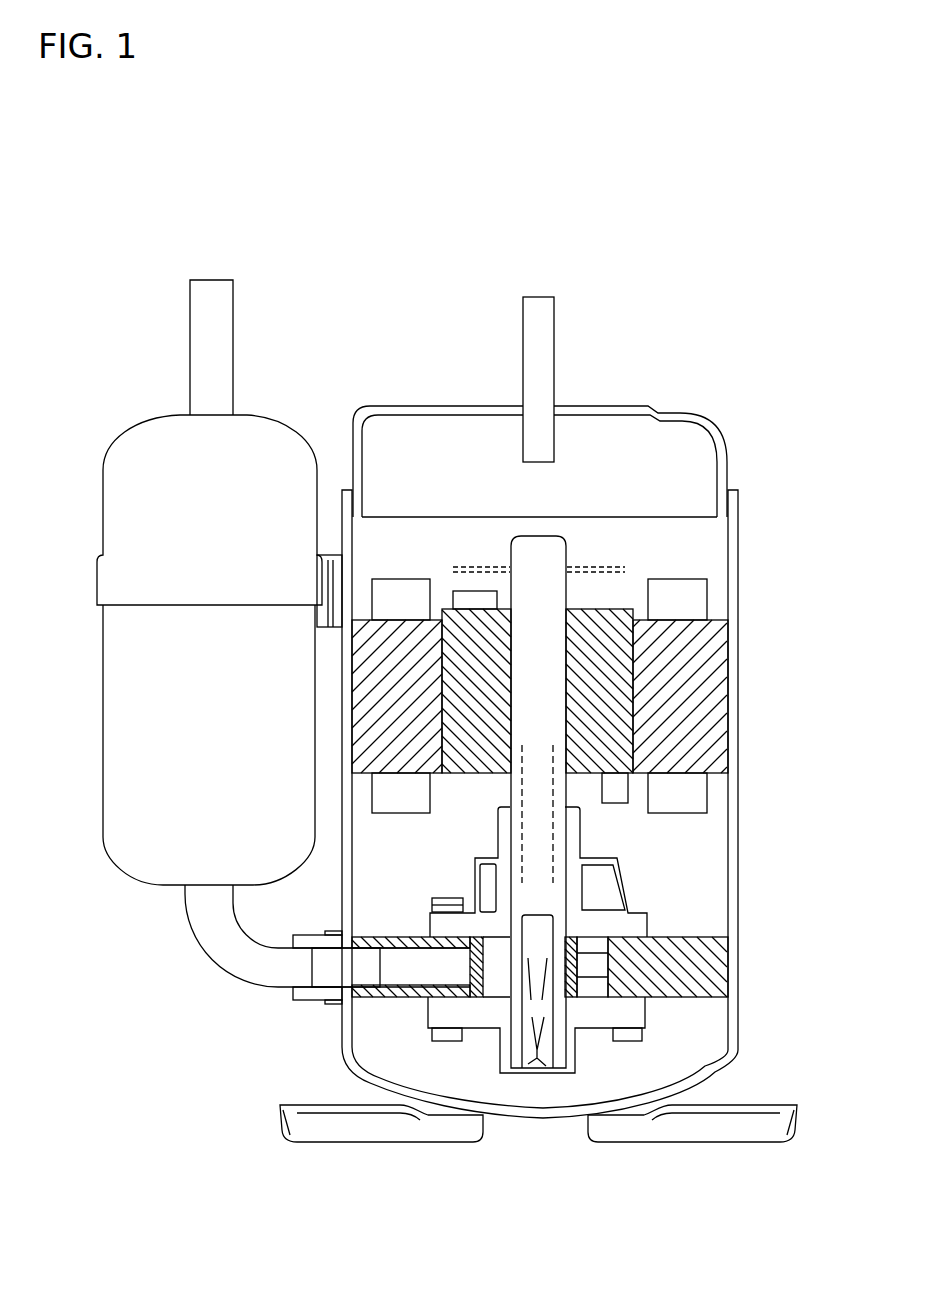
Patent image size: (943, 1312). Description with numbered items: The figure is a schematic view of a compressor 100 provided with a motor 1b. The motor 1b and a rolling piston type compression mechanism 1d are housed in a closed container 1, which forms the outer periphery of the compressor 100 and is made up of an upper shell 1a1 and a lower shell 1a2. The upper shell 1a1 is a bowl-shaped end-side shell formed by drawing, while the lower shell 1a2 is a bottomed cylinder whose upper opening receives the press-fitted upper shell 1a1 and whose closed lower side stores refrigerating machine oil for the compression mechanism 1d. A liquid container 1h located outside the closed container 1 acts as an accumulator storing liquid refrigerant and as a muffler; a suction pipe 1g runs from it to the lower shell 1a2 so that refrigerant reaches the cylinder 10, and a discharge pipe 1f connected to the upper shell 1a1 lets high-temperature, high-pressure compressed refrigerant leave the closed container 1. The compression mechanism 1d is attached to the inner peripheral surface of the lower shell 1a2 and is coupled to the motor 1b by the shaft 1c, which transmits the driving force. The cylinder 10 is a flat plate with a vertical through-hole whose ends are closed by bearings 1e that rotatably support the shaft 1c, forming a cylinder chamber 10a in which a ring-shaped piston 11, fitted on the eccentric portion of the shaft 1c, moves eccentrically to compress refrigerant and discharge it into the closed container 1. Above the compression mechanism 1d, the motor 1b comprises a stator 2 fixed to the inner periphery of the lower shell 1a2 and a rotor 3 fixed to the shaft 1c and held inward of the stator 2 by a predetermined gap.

The compressor 100 is at (134, 228).
The closed container 1 is at (701, 430).
The upper shell 1a1 is at (718, 452).
The lower shell 1a2 is at (737, 843).
The motor 1b is at (785, 625).
The shaft 1c is at (548, 585).
The compression mechanism 1d is at (608, 953).
The bearings 1e is at (612, 923).
The discharge pipe 1f is at (543, 345).
The suction pipe 1g is at (205, 950).
The liquid container 1h is at (130, 713).
The stator 2 is at (688, 663).
The rotor 3 is at (610, 708).
The cylinder 10 is at (707, 975).
The cylinder chamber 10a is at (598, 963).
The piston 11 is at (670, 988).